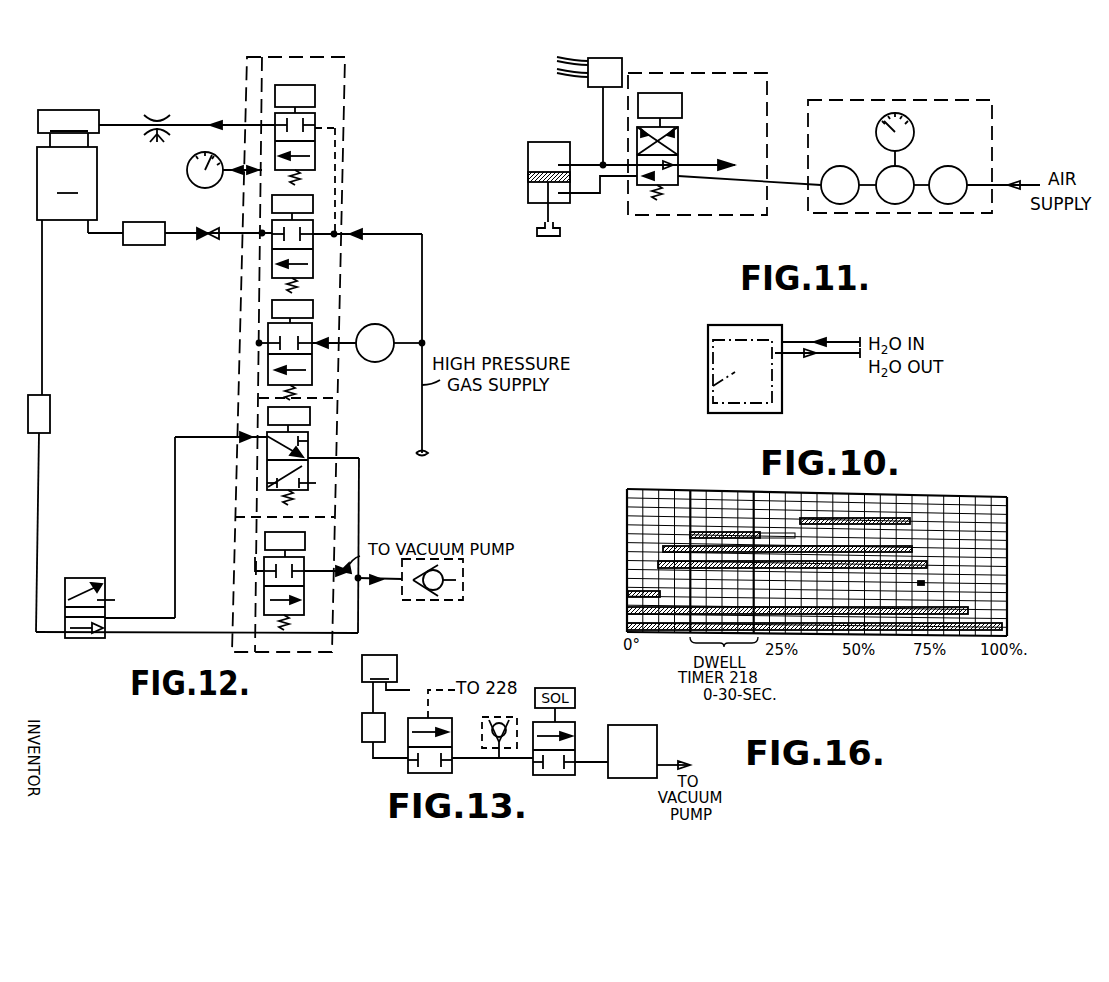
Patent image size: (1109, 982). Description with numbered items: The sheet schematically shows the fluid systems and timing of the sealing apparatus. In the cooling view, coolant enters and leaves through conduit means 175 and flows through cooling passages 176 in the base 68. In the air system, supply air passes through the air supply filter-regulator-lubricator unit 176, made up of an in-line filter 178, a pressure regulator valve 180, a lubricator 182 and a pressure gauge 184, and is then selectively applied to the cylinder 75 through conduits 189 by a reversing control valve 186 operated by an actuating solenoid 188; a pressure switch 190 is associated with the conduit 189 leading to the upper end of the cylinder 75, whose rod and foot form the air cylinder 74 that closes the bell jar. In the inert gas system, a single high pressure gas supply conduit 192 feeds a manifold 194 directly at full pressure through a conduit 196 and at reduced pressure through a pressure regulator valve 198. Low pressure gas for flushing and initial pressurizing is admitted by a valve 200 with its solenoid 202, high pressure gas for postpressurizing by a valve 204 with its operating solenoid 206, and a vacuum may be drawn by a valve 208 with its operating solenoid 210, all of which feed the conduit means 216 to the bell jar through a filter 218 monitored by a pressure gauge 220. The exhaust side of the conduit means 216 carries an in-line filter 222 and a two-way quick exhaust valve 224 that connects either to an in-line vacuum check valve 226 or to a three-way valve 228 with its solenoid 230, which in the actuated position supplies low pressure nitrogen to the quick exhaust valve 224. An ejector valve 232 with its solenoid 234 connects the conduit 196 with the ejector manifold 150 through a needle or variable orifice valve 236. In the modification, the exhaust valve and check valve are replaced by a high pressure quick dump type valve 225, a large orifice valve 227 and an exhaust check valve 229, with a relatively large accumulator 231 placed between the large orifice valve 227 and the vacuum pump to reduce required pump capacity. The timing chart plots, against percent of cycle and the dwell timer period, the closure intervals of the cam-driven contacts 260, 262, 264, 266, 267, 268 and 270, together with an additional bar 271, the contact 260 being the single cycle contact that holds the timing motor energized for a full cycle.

In FIG. 12, the manifold 194 is at (303, 57).
In FIG. 12, the ejector manifold 150 is at (68, 128).
In FIG. 12, the base 68 is at (67, 183).
In FIG. 13, the base 68 is at (379, 668).
In FIG. 10, the base 68 is at (752, 325).
In FIG. 12, the needle or variable orifice valve 236 is at (157, 116).
In FIG. 12, the solenoid 234 is at (303, 85).
In FIG. 12, the ejector valve 232 is at (315, 113).
In FIG. 12, the pressure gauge 220 is at (217, 185).
In FIG. 12, the filter 218 is at (150, 222).
In FIG. 12, the conduit means 216 is at (105, 233).
In FIG. 13, the conduit means 216 is at (400, 690).
In FIG. 12, the operating solenoid 206 is at (313, 204).
In FIG. 12, the valve 204 is at (313, 257).
In FIG. 12, the conduit 196 is at (405, 240).
In FIG. 12, the high pressure inert gas supply conduit 192 is at (455, 431).
In FIG. 12, the solenoid 202 is at (313, 305).
In FIG. 12, the valve 200 is at (312, 326).
In FIG. 12, the pressure regulator valve 198 is at (390, 330).
In FIG. 12, the solenoid 230 is at (310, 412).
In FIG. 12, the three-way valve 228 is at (308, 437).
In FIG. 12, the operating solenoid 210 is at (305, 540).
In FIG. 12, the valve 208 is at (304, 610).
In FIG. 12, the in-line vacuum check valve 226 is at (463, 587).
In FIG. 12, the in-line filter 222 is at (50, 406).
In FIG. 13, the in-line filter 222 is at (360, 730).
In FIG. 12, the two-way quick exhaust valve 224 is at (77, 578).
In FIG. 11, the pressure switch 190 is at (622, 66).
In FIG. 11, the reversing control valve 186 is at (768, 96).
In FIG. 11, the actuating solenoid 188 is at (683, 107).
In FIG. 11, the pressure gauge 184 is at (900, 113).
In FIG. 11, the air supply filter-regulator-lubricator unit 176 is at (947, 100).
In FIG. 10, the air supply filter-regulator-lubricator unit 176 is at (742, 371).
In FIG. 11, the cylinder 75 is at (549, 142).
In FIG. 11, the conduits 189 is at (578, 160).
In FIG. 11, the air cylinder 74 is at (560, 233).
In FIG. 11, the lubricator 182 is at (840, 204).
In FIG. 11, the pressure regulator valve 180 is at (895, 204).
In FIG. 11, the in-line filter 178 is at (946, 204).
In FIG. 10, the conduit means 175 is at (798, 344).
In FIG. 13, the high pressure quick dump type valve 225 is at (438, 731).
In FIG. 13, the exhaust check valve 229 is at (506, 725).
In FIG. 13, the large orifice valve 227 is at (575, 728).
In FIG. 13, the accumulator 231 is at (635, 725).
In FIG. 16, the contact 268 is at (750, 518).
In FIG. 16, the contact 267 is at (692, 532).
In FIG. 16, the contact 266 is at (751, 547).
In FIG. 16, the contact 264 is at (758, 562).
In FIG. 16, the timing mark 271 is at (757, 577).
In FIG. 16, the contact 270 is at (625, 592).
In FIG. 16, the contact 262 is at (779, 608).
In FIG. 16, the single cycle contacts 260 is at (796, 624).